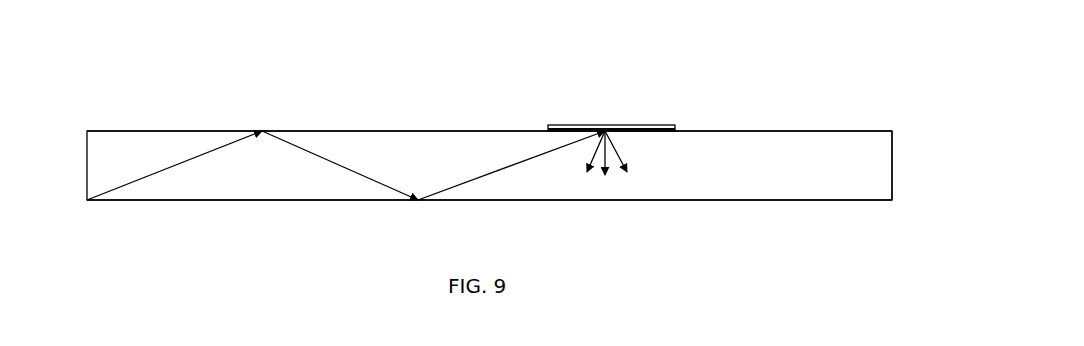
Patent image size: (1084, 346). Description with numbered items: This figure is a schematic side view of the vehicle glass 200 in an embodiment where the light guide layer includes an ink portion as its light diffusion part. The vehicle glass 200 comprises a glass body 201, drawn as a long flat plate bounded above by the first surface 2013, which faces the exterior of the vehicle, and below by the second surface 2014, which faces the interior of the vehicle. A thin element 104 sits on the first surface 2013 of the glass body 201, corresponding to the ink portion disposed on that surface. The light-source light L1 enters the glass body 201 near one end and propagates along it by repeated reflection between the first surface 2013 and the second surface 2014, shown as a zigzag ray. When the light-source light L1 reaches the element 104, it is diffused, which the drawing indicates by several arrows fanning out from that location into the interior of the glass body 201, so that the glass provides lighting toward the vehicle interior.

The vehicle glass 200 is at (421, 64).
The glass body 201 is at (785, 145).
The first surface 2013 is at (868, 131).
The second surface 2014 is at (277, 201).
The light extraction element 104 is at (562, 126).
The light-source light L1 is at (225, 143).